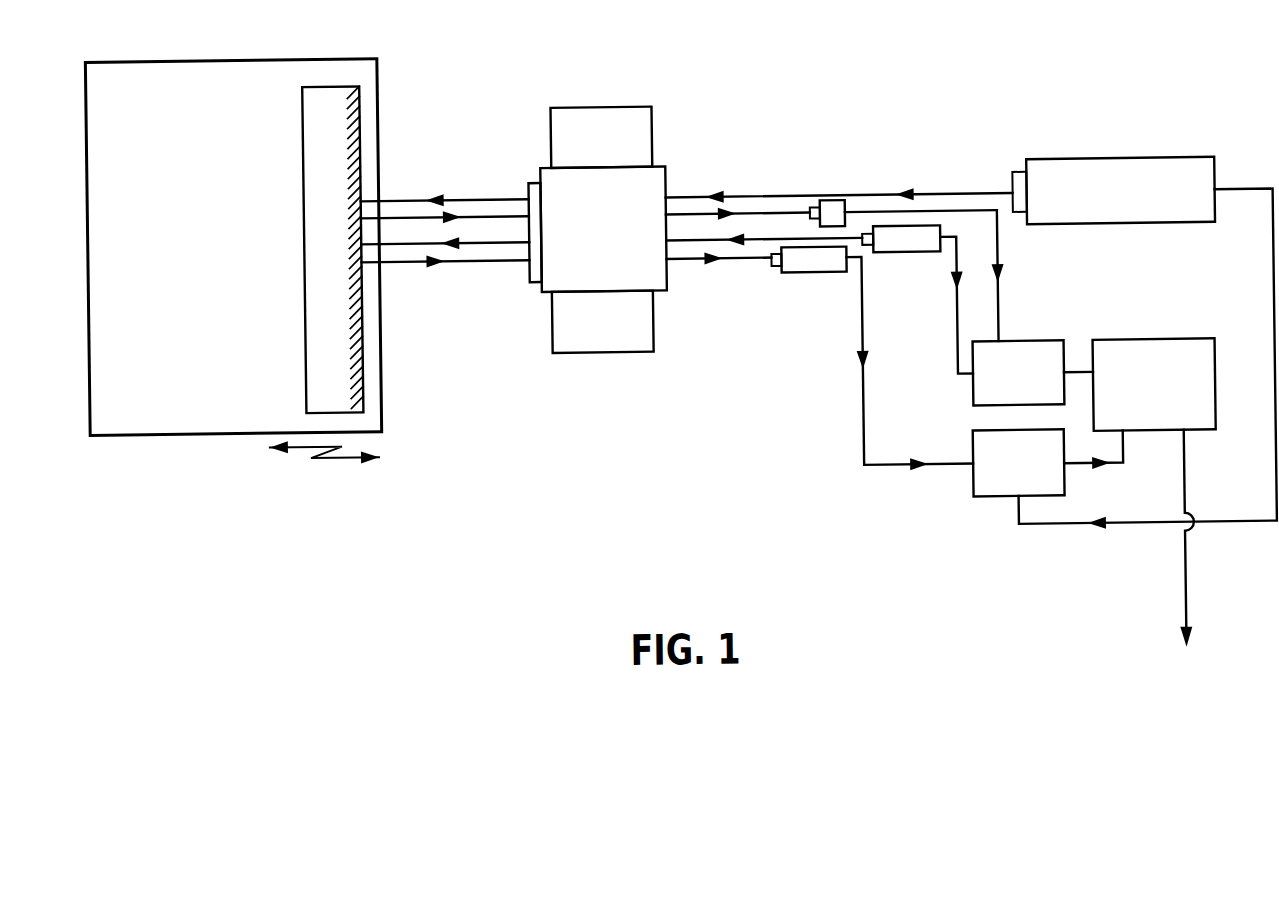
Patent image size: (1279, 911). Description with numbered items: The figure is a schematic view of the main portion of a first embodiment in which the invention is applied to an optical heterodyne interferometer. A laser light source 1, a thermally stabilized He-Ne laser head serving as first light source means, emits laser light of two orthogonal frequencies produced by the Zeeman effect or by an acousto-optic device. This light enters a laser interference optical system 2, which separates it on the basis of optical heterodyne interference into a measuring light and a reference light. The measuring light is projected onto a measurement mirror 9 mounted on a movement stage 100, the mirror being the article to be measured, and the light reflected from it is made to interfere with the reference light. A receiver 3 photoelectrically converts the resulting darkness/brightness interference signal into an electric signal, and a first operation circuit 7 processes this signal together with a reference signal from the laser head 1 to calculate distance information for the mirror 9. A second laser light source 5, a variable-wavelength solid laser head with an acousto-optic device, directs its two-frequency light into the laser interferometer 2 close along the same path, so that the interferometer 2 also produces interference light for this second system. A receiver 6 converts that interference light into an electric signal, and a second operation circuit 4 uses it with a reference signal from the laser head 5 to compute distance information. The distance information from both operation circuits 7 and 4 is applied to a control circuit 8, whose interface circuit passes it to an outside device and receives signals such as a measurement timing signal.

The laser light source 1 is at (1103, 164).
The laser interference optical system 2 is at (667, 180).
The receiver 3 is at (818, 274).
The second operation circuit 4 is at (1030, 345).
The laser light source 5 is at (916, 254).
The receiver 6 is at (834, 202).
The first operation circuit 7 is at (1000, 500).
The control circuit 8 is at (1151, 345).
The measurement mirror 9 is at (304, 164).
The movement stage 100 is at (135, 428).